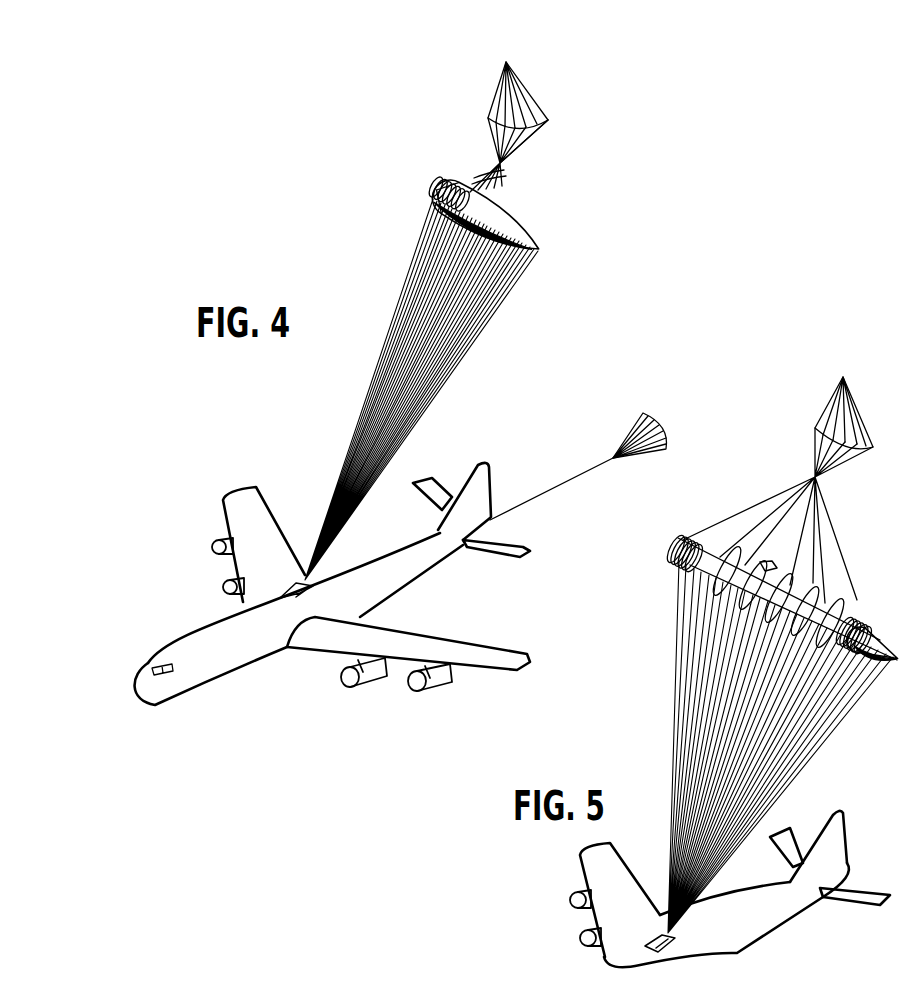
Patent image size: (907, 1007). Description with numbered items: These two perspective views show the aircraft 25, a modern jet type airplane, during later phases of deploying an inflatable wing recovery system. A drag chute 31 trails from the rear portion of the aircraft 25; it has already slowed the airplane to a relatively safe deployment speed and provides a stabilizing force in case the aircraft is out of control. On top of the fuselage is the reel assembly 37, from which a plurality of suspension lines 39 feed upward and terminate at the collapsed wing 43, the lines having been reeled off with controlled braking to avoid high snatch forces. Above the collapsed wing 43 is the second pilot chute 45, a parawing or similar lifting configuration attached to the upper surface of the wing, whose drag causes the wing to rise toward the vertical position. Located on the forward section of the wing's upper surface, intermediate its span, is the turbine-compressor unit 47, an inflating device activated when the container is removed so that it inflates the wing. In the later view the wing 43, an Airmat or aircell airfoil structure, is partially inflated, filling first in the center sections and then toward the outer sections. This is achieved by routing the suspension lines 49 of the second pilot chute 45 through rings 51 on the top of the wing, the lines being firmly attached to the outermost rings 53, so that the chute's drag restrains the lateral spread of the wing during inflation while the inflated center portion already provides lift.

In FIG. 4, the aircraft 25 is at (228, 660).
In FIG. 5, the aircraft 25 is at (780, 918).
In FIG. 4, the drag chute 31 is at (677, 435).
In FIG. 4, the reel assembly 37 is at (297, 598).
In FIG. 5, the reel assembly 37 is at (678, 948).
In FIG. 4, the suspension lines 39 is at (452, 371).
In FIG. 5, the suspension lines 39 is at (806, 738).
In FIG. 4, the collapsed wing 43 is at (518, 222).
In FIG. 5, the collapsed wing 43 is at (868, 636).
In FIG. 4, the second pilot chute 45 is at (536, 108).
In FIG. 5, the second pilot chute 45 is at (853, 416).
In FIG. 4, the turbine-compressor unit 47 is at (466, 190).
In FIG. 5, the turbine-compressor unit 47 is at (766, 561).
In FIG. 4, the suspension lines 49 is at (520, 147).
In FIG. 5, the suspension lines 49 is at (822, 522).
In FIG. 5, the rings 51 is at (730, 548).
In FIG. 5, the outermost rings 53 is at (688, 542).